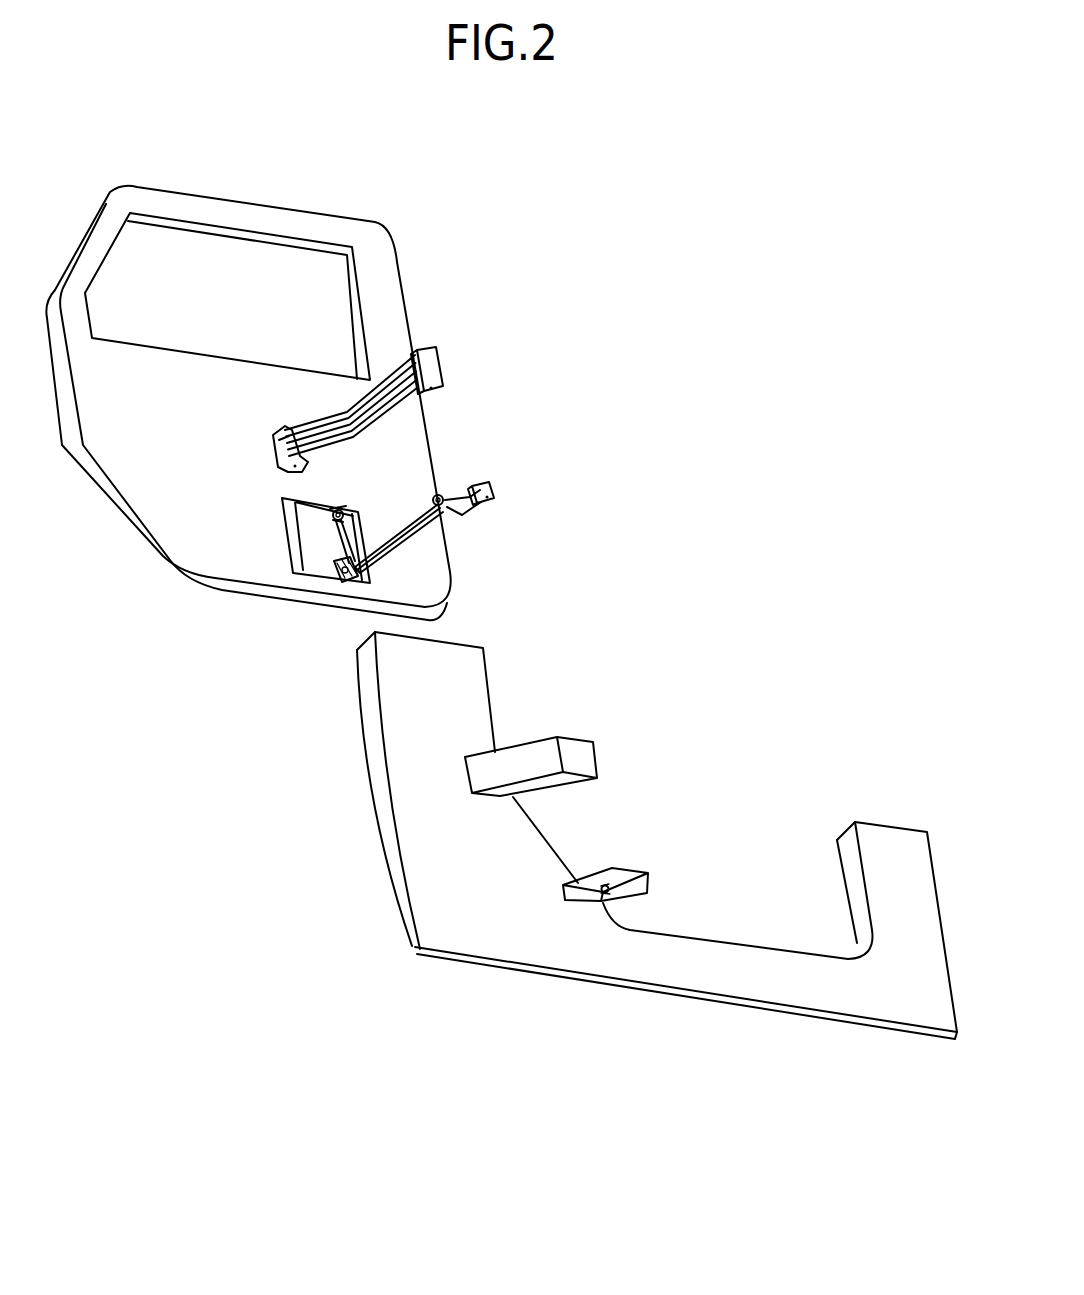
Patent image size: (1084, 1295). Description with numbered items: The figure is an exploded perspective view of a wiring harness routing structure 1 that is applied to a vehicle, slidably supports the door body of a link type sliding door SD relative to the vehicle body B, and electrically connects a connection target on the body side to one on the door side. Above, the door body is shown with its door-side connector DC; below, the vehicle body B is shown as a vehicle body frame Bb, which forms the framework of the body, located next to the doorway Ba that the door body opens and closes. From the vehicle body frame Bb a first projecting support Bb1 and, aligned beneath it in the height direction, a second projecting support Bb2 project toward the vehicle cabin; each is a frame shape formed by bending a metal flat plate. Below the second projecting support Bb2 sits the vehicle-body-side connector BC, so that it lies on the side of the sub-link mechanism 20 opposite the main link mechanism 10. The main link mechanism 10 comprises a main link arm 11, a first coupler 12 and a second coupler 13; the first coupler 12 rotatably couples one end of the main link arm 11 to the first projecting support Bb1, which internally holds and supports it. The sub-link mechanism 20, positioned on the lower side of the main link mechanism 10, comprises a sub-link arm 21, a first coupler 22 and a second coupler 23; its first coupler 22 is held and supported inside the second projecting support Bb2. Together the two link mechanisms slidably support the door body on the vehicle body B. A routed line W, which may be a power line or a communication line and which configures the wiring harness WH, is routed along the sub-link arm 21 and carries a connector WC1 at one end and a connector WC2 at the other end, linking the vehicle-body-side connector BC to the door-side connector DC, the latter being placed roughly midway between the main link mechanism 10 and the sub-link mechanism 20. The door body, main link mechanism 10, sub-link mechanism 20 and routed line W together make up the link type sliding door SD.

The wiring harness routing structure 1 is at (314, 495).
The main link mechanism 10 is at (248, 376).
The main link arm 11 is at (343, 385).
The link type sliding door SD is at (248, 367).
The first coupler 12 is at (430, 357).
The second coupler 13 is at (273, 443).
The routed line W is at (257, 617).
The wiring harness WH is at (340, 537).
The sub-link mechanism 20 is at (342, 567).
The sub-link arm 21 is at (418, 531).
The first coupler 22 is at (494, 487).
The second coupler 23 is at (345, 582).
The connector WC1 is at (437, 495).
The connector WC2 is at (332, 522).
The door-side connector DC is at (333, 513).
The vehicle body B is at (606, 892).
The vehicle body frame Bb is at (606, 835).
The doorway Ba is at (735, 886).
The first projecting support Bb1 is at (488, 773).
The second projecting support Bb2 is at (468, 942).
The vehicle-body-side connector BC is at (595, 893).